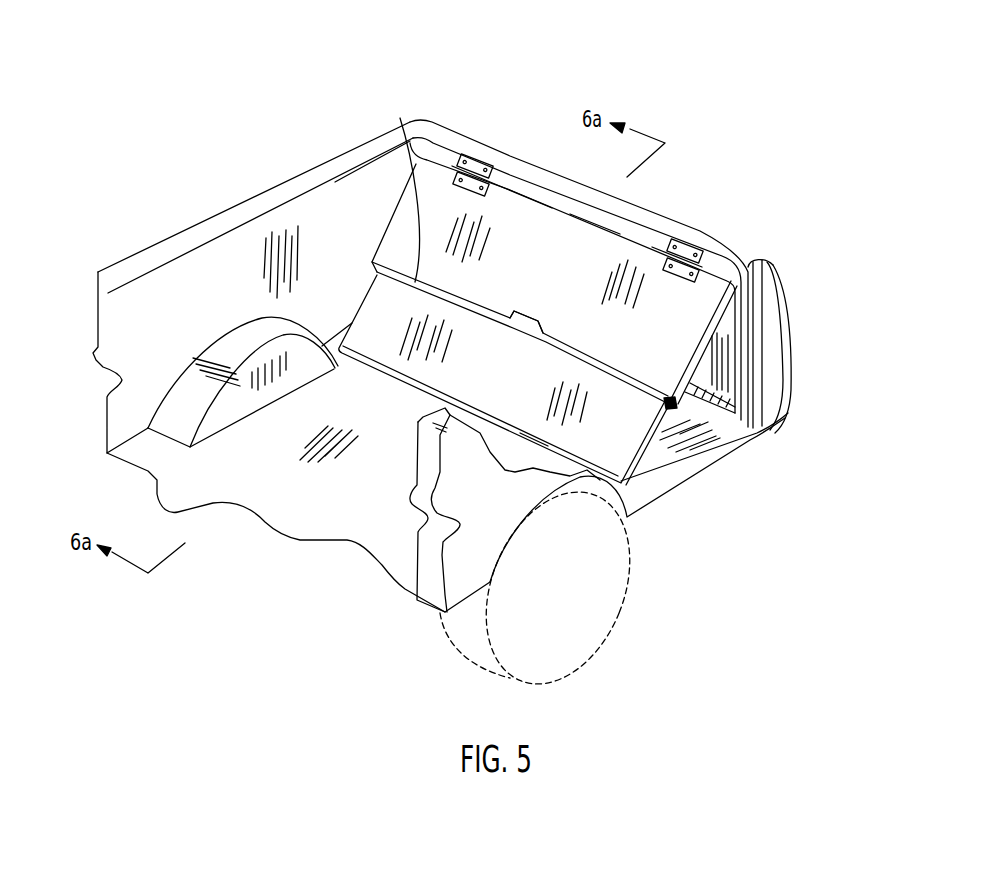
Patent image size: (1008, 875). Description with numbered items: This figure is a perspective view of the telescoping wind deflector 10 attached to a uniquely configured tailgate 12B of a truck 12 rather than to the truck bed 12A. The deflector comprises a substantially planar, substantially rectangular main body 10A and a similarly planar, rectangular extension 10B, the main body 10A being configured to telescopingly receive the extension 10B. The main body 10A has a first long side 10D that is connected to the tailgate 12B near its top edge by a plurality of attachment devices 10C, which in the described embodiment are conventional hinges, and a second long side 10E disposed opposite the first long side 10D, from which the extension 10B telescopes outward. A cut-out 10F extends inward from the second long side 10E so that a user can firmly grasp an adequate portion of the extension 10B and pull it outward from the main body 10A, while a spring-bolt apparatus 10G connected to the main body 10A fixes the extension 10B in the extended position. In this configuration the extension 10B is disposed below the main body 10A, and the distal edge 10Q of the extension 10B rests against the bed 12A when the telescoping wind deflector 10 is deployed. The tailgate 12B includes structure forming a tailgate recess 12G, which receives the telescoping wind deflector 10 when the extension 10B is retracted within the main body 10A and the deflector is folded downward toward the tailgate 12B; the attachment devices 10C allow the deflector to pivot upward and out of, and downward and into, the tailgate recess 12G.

The telescoping wind deflector 10 is at (272, 112).
The main body 10A is at (567, 257).
The extension 10B is at (383, 330).
The attachment devices 10C is at (477, 162).
The first long side 10D is at (517, 192).
The second long side 10E is at (400, 118).
The cut-out 10F is at (510, 322).
The spring-bolt apparatus 10G is at (668, 408).
The distal edge 10Q is at (533, 438).
The truck 12 is at (798, 441).
The bed 12A is at (325, 514).
The tailgate 12B is at (723, 256).
The tailgate recess 12G is at (705, 371).